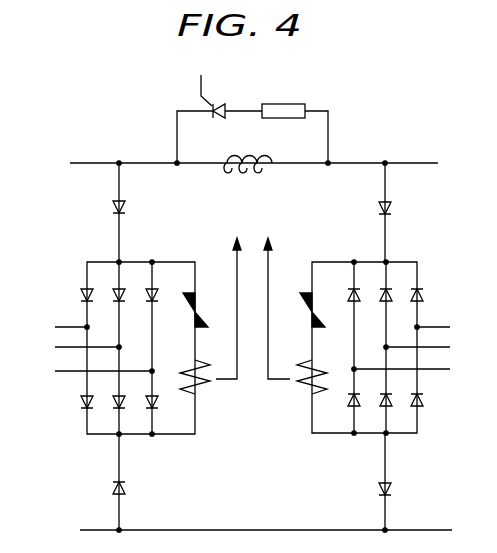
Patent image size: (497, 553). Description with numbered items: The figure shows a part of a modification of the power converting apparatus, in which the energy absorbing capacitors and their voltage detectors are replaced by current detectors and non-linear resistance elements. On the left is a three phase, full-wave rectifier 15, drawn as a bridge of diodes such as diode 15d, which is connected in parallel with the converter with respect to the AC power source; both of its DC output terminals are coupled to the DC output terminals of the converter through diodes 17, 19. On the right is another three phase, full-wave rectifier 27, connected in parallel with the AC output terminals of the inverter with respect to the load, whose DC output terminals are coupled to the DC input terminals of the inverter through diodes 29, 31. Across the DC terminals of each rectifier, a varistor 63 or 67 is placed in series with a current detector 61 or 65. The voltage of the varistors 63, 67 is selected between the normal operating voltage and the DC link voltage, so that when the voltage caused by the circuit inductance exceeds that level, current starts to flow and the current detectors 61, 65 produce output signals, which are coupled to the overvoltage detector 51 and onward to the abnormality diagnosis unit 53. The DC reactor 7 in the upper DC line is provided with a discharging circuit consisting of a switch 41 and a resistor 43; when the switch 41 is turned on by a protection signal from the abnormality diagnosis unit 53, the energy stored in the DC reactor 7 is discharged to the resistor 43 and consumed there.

The DC reactor 7 is at (256, 170).
The three phase, full-wave rectifier 15 is at (110, 361).
The diode of first converter 15d is at (82, 402).
The diode 17 is at (110, 207).
The diode 19 is at (127, 485).
The three phase, full-wave rectifier 27 is at (429, 463).
The diode 29 is at (393, 208).
The diode 31 is at (393, 489).
The switch 41 is at (217, 117).
The resistor 43 is at (280, 103).
The overvoltage detector 51 is at (256, 298).
The abnormality diagnosis unit 53 is at (203, 81).
The current detector 61 is at (203, 396).
The non-linear resistance element (varistor) 63 is at (197, 310).
The current detector 65 is at (304, 396).
The non-linear resistance element (varistor) 67 is at (299, 306).